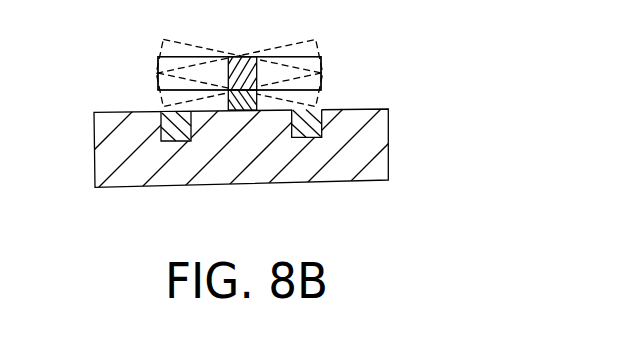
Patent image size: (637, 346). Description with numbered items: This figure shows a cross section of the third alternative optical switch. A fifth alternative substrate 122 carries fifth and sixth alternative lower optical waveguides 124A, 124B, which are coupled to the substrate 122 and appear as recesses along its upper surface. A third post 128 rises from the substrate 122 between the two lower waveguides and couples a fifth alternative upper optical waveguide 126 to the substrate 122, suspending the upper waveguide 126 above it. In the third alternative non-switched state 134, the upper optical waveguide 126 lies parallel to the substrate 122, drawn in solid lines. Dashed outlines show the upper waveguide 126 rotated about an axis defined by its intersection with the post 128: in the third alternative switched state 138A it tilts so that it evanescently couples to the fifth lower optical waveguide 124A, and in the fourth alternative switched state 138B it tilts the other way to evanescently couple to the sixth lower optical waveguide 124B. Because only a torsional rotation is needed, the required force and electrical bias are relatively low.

The fifth alternative substrate 122 is at (388, 164).
The fifth alternative lower optical waveguide 124A is at (168, 141).
The sixth alternative lower optical waveguide 124B is at (317, 138).
The fifth alternative upper optical waveguide 126 is at (322, 68).
The third post 128 is at (235, 110).
The third alternative non-switched state 134 is at (158, 72).
The third alternative switched state 138A is at (190, 77).
The fourth alternative switched state 138B is at (291, 73).